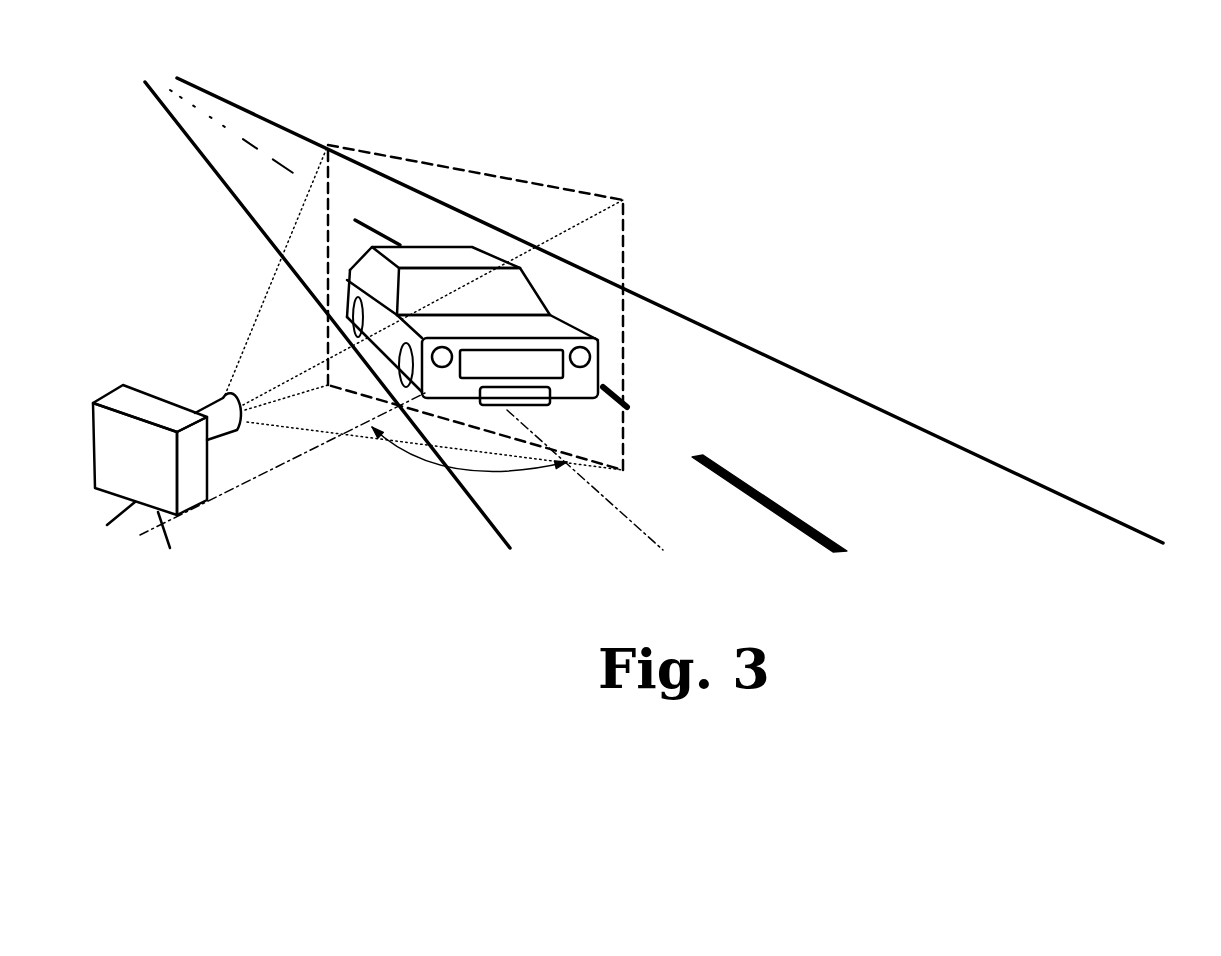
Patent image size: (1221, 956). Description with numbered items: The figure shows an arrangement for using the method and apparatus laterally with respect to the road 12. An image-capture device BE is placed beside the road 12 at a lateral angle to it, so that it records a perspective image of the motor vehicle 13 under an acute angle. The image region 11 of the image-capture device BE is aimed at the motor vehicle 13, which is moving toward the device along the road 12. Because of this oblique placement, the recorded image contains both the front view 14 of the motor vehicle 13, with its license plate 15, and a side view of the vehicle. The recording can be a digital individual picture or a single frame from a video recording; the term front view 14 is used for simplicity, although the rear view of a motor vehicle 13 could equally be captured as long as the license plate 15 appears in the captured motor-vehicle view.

The image region 11 is at (460, 178).
The road 12 is at (242, 183).
The motor vehicle 13 is at (581, 344).
The front view 14 is at (583, 375).
The license plate 15 is at (545, 402).
The image-capture device BE is at (203, 507).